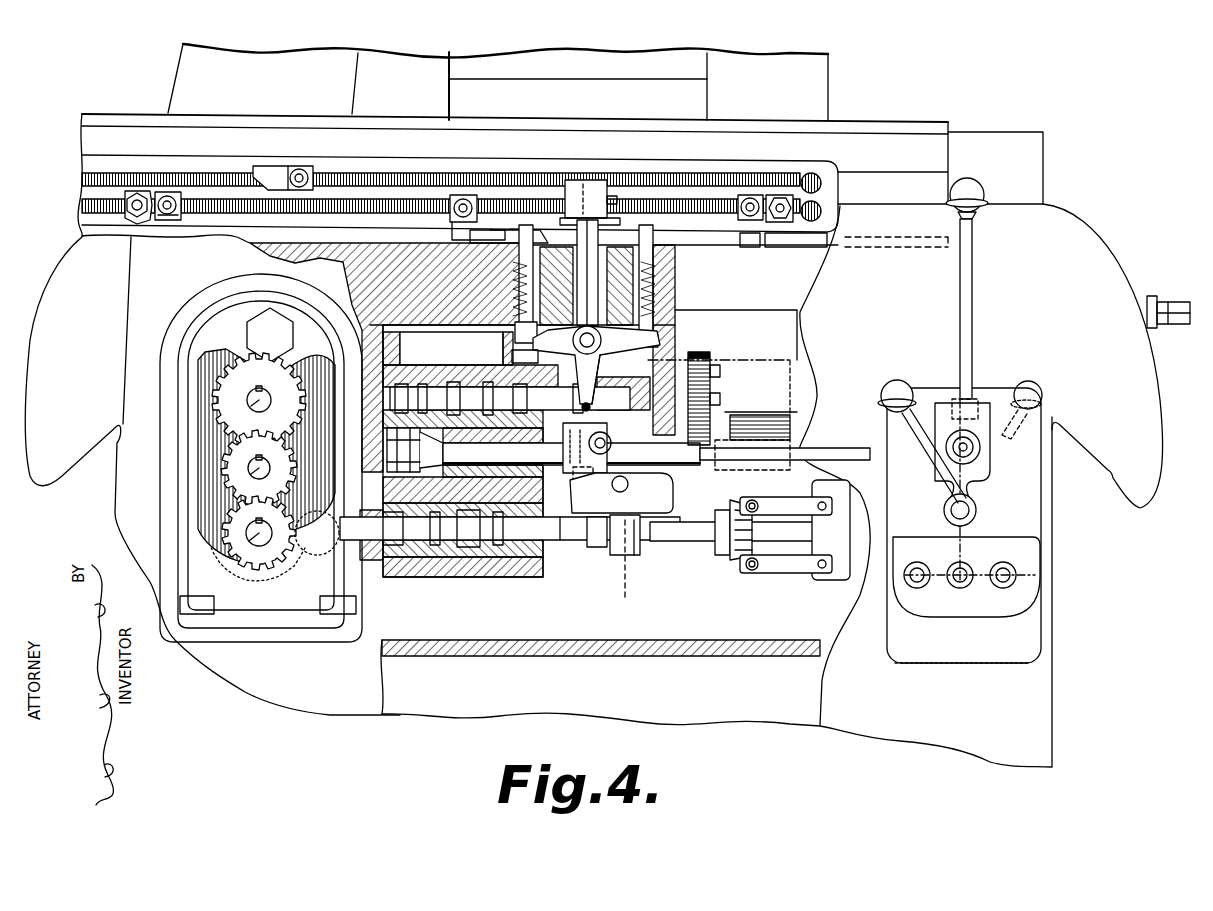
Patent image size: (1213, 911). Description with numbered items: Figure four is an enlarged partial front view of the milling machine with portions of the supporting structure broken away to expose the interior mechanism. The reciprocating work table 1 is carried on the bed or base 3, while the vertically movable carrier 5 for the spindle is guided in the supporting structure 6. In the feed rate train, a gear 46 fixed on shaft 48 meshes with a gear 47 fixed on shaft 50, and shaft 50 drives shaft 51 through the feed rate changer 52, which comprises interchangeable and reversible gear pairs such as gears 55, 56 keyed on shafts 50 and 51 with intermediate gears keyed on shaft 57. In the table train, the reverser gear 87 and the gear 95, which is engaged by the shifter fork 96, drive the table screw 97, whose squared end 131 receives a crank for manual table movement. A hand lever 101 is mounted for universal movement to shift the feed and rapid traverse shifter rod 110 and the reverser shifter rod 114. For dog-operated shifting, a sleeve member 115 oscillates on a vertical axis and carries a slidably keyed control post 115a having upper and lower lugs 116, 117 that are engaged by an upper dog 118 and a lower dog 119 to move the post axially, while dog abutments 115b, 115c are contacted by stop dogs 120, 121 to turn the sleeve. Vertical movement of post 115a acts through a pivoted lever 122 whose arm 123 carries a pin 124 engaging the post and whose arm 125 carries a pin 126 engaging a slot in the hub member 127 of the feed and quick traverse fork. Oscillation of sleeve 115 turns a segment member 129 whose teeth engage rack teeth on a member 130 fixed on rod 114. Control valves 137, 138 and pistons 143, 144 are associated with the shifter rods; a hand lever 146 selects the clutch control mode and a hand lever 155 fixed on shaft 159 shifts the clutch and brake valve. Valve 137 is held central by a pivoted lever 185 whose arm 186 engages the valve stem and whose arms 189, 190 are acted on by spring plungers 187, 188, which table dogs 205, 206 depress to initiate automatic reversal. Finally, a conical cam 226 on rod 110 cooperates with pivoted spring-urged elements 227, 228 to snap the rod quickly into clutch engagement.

The table 1 is at (856, 138).
The bed 3 is at (1053, 546).
The carrier member 5 is at (517, 66).
The supporting structure 6 is at (430, 105).
The gear 46 is at (270, 566).
The gear 47 is at (270, 585).
The shaft 48 is at (311, 549).
The shaft 50 is at (242, 560).
The shaft 51 is at (259, 400).
The feed rate changer 52 is at (215, 487).
The gear 55 is at (276, 468).
The gear 56 is at (268, 399).
The shaft 57 is at (259, 468).
The gear 87 is at (702, 360).
The gear 95 is at (800, 421).
The shifter fork 96 is at (797, 432).
The table screw 97 is at (1151, 296).
The hand lever 101 is at (958, 294).
The shifter rod 110 is at (571, 535).
The shifter rod 114 is at (792, 462).
The sleeve member 115 is at (582, 350).
The control post 115a is at (592, 180).
The dog abutment member 115b is at (509, 238).
The dog abutment member 115c is at (759, 241).
The lug 116 is at (545, 178).
The lug 117 is at (606, 215).
The dog 118 is at (275, 175).
The dog 119 is at (455, 226).
The dog 120 is at (172, 193).
The dog 121 is at (748, 195).
The pivoted lever 122 is at (621, 493).
The arm 123 is at (616, 492).
The pin 124 is at (587, 528).
The arm 125 is at (605, 556).
The pin 126 is at (628, 564).
The member 127 is at (592, 556).
The segment member 129 is at (612, 440).
The member 130 is at (575, 486).
The squared end 131 is at (1155, 358).
The valve 137 is at (525, 395).
The valve 138 is at (656, 452).
The piston 143 is at (465, 450).
The piston 144 is at (356, 548).
The hand lever 146 is at (996, 585).
The hand lever 155 is at (910, 420).
The shaft 159 is at (950, 513).
The pivoted lever 185 is at (596, 368).
The arm 186 is at (597, 374).
The spring plunger 187 is at (520, 298).
The spring plunger 188 is at (676, 290).
The arm 189 is at (525, 357).
The arm 190 is at (673, 330).
The table dog 205 is at (785, 195).
The table dog 206 is at (136, 192).
The conical cam 226 is at (740, 565).
The pivoted spring urged element 227 is at (795, 530).
The pivoted spring urged element 228 is at (786, 564).